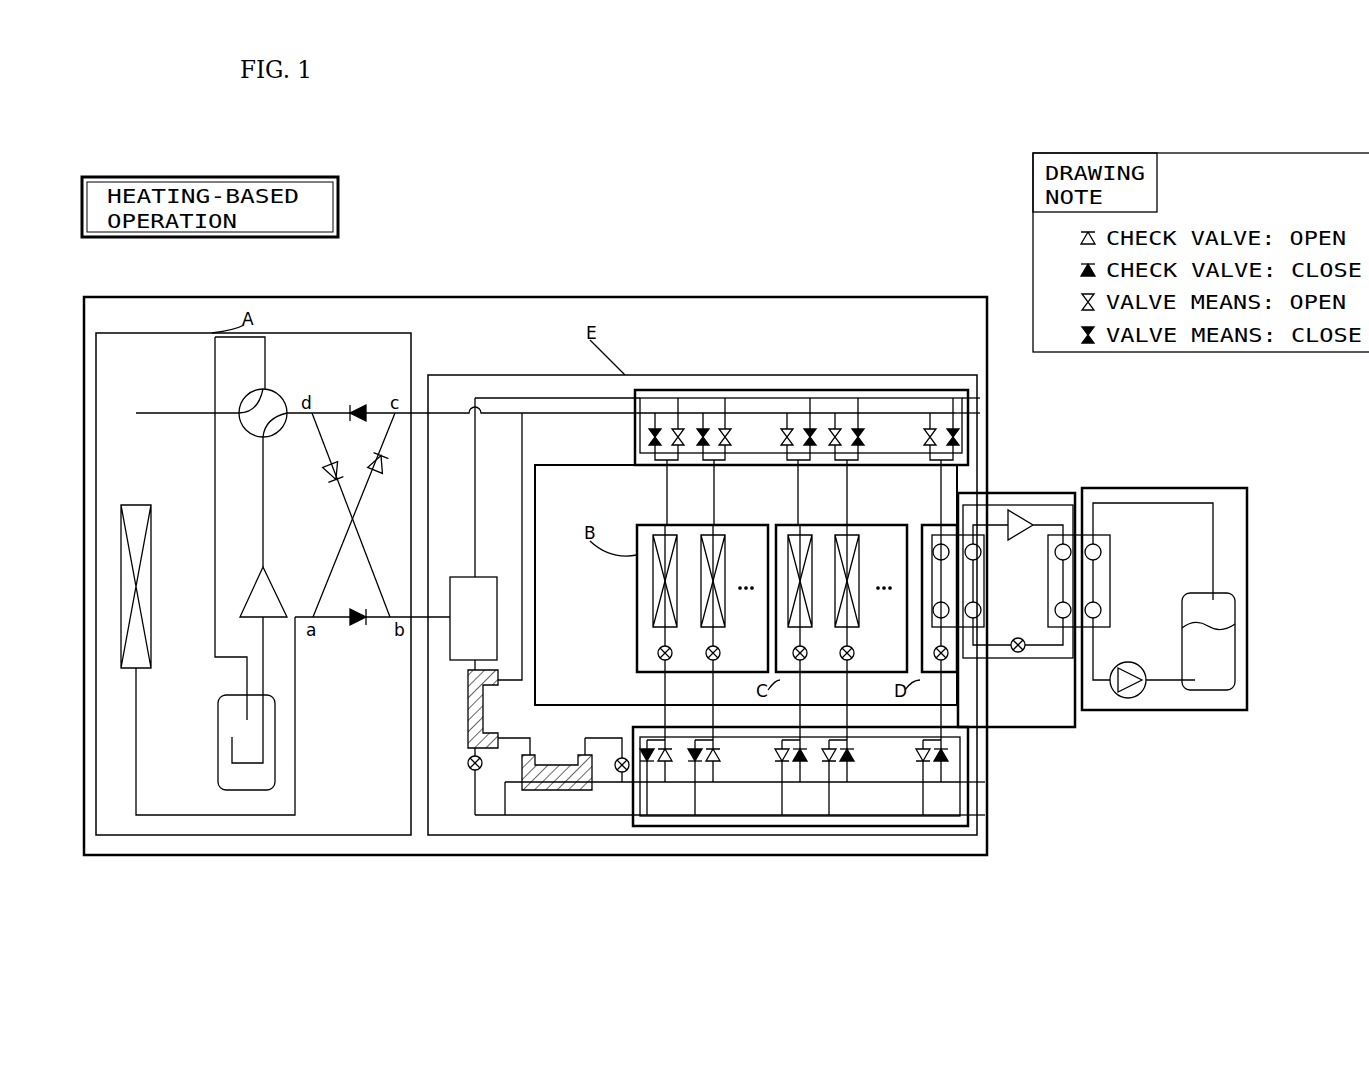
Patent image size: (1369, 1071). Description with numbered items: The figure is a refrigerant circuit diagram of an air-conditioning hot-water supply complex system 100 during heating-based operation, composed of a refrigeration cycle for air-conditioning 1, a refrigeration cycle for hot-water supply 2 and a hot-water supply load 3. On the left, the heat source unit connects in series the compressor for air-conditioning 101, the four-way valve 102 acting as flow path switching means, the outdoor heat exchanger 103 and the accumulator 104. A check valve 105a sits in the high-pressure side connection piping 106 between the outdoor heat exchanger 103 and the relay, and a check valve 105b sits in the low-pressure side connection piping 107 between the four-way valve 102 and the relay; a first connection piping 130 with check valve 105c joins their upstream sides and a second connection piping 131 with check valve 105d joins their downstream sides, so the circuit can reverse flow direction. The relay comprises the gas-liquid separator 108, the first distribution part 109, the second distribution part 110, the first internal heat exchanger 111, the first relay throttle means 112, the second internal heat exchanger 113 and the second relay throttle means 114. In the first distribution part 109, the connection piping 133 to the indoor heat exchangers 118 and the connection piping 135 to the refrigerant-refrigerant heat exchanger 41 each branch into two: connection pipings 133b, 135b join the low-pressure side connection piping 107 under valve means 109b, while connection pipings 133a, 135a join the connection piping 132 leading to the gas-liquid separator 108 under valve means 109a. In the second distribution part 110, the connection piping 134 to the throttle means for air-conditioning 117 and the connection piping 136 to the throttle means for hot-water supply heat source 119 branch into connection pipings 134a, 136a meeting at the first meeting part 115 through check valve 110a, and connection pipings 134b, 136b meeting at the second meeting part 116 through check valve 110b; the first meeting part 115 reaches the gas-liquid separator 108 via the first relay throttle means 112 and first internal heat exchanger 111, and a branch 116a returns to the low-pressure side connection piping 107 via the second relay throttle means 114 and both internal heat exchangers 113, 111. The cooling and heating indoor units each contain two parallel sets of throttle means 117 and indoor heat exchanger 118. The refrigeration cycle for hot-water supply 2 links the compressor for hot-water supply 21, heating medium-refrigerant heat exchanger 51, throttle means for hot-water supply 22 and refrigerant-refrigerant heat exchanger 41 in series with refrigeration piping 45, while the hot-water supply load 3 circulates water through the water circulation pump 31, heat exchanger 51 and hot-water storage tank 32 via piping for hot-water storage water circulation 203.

The refrigeration cycle for air-conditioning 1 is at (200, 297).
The refrigeration cycle for hot-water supply 2 is at (1045, 660).
The hot-water supply load 3 is at (1165, 488).
The compressor for hot-water supply 21 is at (1015, 510).
The throttle means for hot-water supply 22 is at (1018, 653).
The water circulation pump 31 is at (1128, 698).
The hot-water storage tank 32 is at (1225, 690).
The refrigerant-refrigerant heat exchanger 41 is at (980, 592).
The refrigeration piping 45 is at (1052, 535).
The heating medium-refrigerant heat exchanger 51 is at (1100, 577).
The air-conditioning hot-water supply complex system 100 is at (640, 268).
The compressor for air-conditioning 101 is at (248, 592).
The four-way valve 102 is at (272, 390).
The outdoor heat exchanger 103 is at (152, 530).
The accumulator 104 is at (222, 735).
The check valve 105a is at (355, 628).
The check valve 105b is at (358, 404).
The check valve 105c is at (328, 482).
The check valve 105d is at (378, 474).
The high-pressure side connection piping 106 is at (408, 628).
The low-pressure side connection piping 107 is at (418, 405).
The gas-liquid separator 108 is at (452, 578).
The first distribution part 109 is at (920, 390).
The valve means 109a is at (704, 428).
The valve means 109b is at (716, 465).
The second distribution part 110 is at (850, 828).
The check valve 110a is at (690, 738).
The check valve 110b is at (700, 792).
The first internal heat exchanger 111 is at (468, 708).
The first relay throttle means 112 is at (468, 770).
The second internal heat exchanger 113 is at (556, 760).
The second relay throttle means 114 is at (612, 752).
The first meeting part 115 is at (525, 817).
The second meeting part 116 is at (625, 790).
The second meeting part branch 116a is at (520, 510).
The throttle means for air-conditioning 117 is at (680, 642).
The indoor heat exchanger 118 is at (700, 527).
The throttle means for hot-water supply heat source 119 is at (957, 665).
The first connection piping 130 is at (320, 560).
The second connection piping 131 is at (383, 572).
The connection piping 132 is at (496, 398).
The connection piping 133 is at (665, 492).
The connection piping 133a is at (650, 426).
The connection piping 133b is at (728, 440).
The connection piping 134 is at (640, 682).
The connection piping 134a is at (660, 790).
The connection piping 134b is at (748, 782).
The connection piping 135 is at (932, 465).
The connection piping 135a is at (980, 398).
The connection piping 135b is at (980, 413).
The connection piping 136 is at (975, 728).
The connection piping 136a is at (985, 815).
The connection piping 136b is at (985, 782).
The piping for hot-water storage water circulation 203 is at (1165, 682).